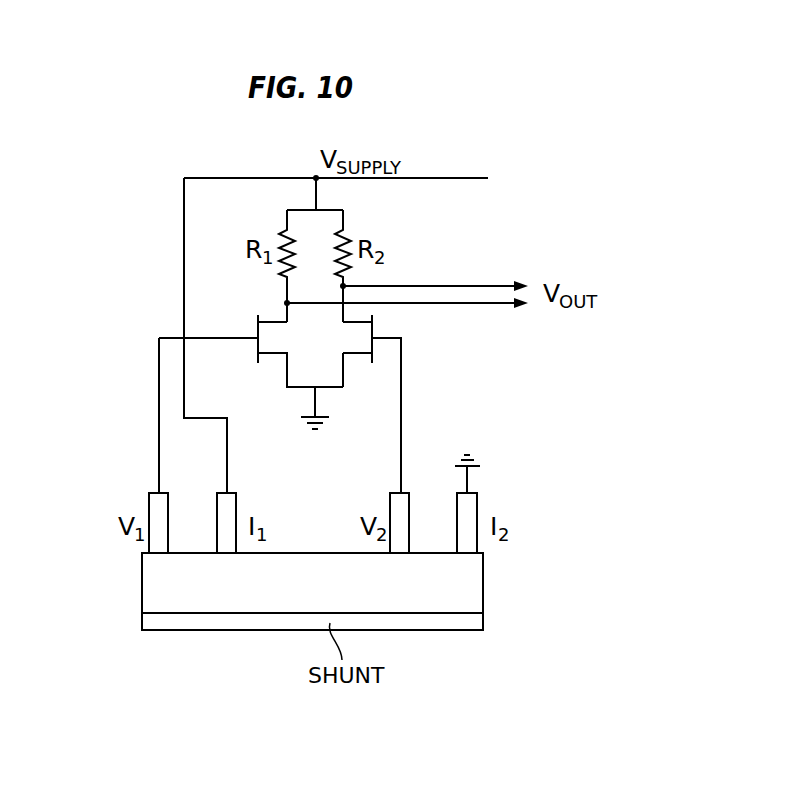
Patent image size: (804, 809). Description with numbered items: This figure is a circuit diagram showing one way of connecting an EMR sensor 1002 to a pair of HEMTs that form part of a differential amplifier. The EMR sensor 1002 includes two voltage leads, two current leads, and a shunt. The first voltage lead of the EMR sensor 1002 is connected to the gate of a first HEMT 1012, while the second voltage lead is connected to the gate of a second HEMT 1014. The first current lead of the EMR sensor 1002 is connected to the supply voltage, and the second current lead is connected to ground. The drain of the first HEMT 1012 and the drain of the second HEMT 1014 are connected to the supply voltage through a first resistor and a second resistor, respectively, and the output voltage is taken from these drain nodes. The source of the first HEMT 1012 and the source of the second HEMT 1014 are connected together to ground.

The EMR sensor 1002 is at (142, 583).
The first HEMT 1012 is at (226, 304).
The second HEMT 1014 is at (419, 360).